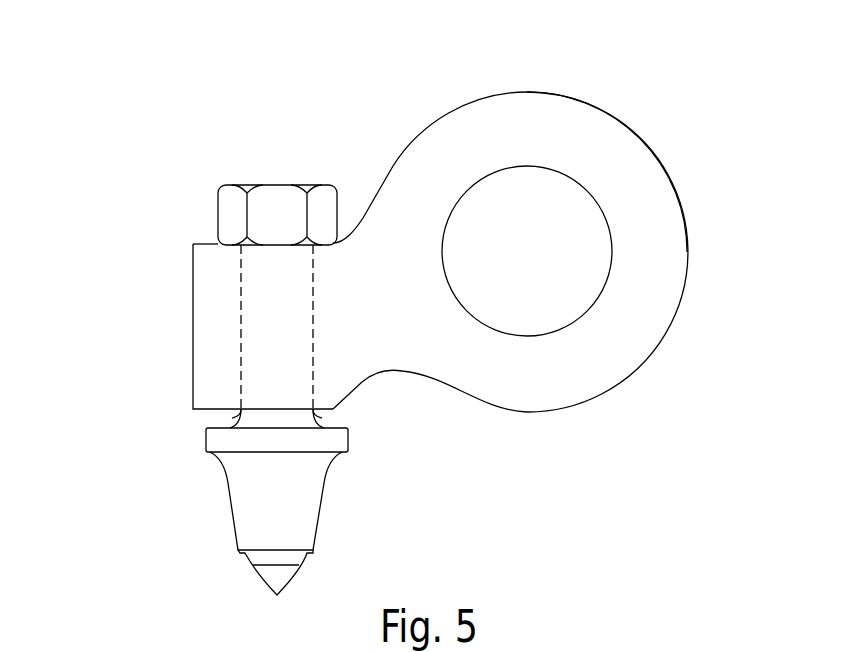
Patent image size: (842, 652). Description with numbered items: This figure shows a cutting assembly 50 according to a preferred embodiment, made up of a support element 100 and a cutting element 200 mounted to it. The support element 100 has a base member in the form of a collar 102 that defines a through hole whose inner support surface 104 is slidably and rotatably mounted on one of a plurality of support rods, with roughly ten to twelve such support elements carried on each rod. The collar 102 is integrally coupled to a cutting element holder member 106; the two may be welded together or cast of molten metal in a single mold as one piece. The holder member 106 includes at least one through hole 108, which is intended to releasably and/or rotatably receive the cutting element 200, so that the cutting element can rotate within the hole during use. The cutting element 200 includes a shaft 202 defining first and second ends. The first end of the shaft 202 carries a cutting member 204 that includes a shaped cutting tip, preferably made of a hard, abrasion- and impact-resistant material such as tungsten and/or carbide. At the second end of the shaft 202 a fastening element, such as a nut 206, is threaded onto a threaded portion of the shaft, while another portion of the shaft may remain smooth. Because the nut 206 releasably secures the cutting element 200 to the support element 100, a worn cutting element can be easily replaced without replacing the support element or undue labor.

The cutting assembly 50 is at (445, 73).
The support element 100 is at (552, 93).
The collar 102 is at (647, 190).
The inner support surface 104 is at (600, 301).
The cutting element holder member 106 is at (193, 311).
The through hole 108 is at (241, 343).
The cutting element 200 is at (202, 503).
The shaft 202 is at (240, 284).
The cutting member 204 is at (233, 532).
The nut 206 is at (218, 213).